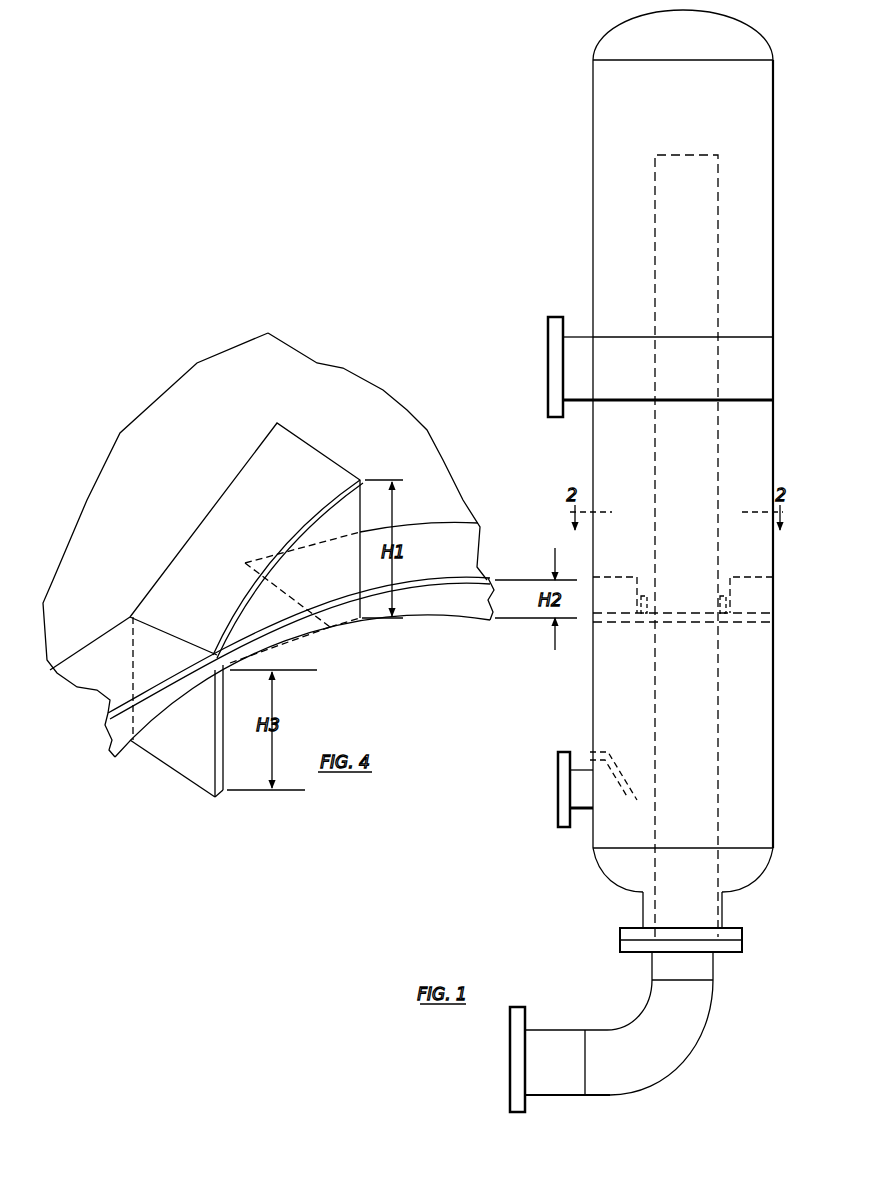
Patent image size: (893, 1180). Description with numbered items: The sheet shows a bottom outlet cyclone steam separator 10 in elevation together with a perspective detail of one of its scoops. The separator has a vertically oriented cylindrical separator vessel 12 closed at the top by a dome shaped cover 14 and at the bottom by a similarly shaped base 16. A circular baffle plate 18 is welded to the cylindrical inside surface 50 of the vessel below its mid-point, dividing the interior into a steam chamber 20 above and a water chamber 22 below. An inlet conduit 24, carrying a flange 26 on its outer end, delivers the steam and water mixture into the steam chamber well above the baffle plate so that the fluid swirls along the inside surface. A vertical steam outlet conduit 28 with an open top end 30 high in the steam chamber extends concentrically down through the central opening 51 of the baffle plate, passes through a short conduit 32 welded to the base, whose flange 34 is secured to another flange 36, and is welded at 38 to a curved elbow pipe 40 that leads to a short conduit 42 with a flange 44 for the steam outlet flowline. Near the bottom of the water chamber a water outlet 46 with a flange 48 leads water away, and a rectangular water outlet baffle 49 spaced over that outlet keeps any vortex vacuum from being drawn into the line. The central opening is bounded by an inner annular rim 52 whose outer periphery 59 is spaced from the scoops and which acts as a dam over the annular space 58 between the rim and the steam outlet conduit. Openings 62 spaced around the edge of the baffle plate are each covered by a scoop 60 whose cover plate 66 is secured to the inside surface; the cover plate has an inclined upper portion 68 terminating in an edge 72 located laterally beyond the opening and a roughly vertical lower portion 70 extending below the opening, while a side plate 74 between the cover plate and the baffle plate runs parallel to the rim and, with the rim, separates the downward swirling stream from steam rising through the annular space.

In FIG. 1, the bottom outlet cyclone steam separator 10 is at (637, 451).
In FIG. 1, the separator vessel 12 is at (630, 498).
In FIG. 4, the separator vessel 12 is at (318, 383).
In FIG. 1, the dome shaped cover 14 is at (640, 45).
In FIG. 1, the base 16 is at (613, 858).
In FIG. 1, the baffle plate 18 is at (612, 622).
In FIG. 4, the baffle plate 18 is at (430, 548).
In FIG. 1, the steam chamber 20 is at (735, 494).
In FIG. 1, the water chamber 22 is at (723, 754).
In FIG. 1, the inlet conduit 24 is at (638, 360).
In FIG. 1, the flange 26 is at (555, 325).
In FIG. 1, the vertical steam outlet conduit 28 is at (680, 455).
In FIG. 1, the open top end 30 is at (686, 155).
In FIG. 1, the short conduit 32 is at (643, 905).
In FIG. 1, the flange 34 is at (625, 938).
In FIG. 1, the flange 36 is at (652, 958).
In FIG. 1, the weld 38 is at (672, 985).
In FIG. 1, the curved elbow pipe 40 is at (665, 1033).
In FIG. 1, the short conduit 42 is at (555, 1063).
In FIG. 1, the flange 44 is at (517, 1070).
In FIG. 1, the water outlet 46 is at (583, 775).
In FIG. 1, the flange 48 is at (563, 763).
In FIG. 1, the water outlet baffle 49 is at (628, 800).
In FIG. 4, the cylindrical inside surface 50 is at (226, 404).
In FIG. 1, the central opening 51 is at (690, 628).
In FIG. 1, the inner annular rim 52 is at (642, 582).
In FIG. 4, the inner annular rim 52 is at (445, 600).
In FIG. 1, the annular space 58 is at (650, 623).
In FIG. 4, the outer periphery 59 is at (108, 722).
In FIG. 1, the scoop 60 is at (613, 573).
In FIG. 4, the scoop 60 is at (140, 582).
In FIG. 4, the opening 62 is at (235, 606).
In FIG. 4, the cover plate 66 is at (236, 520).
In FIG. 4, the upper portion 68 is at (262, 509).
In FIG. 4, the lower portion 70 is at (220, 755).
In FIG. 4, the edge 72 is at (317, 447).
In FIG. 4, the side plate 74 is at (317, 581).